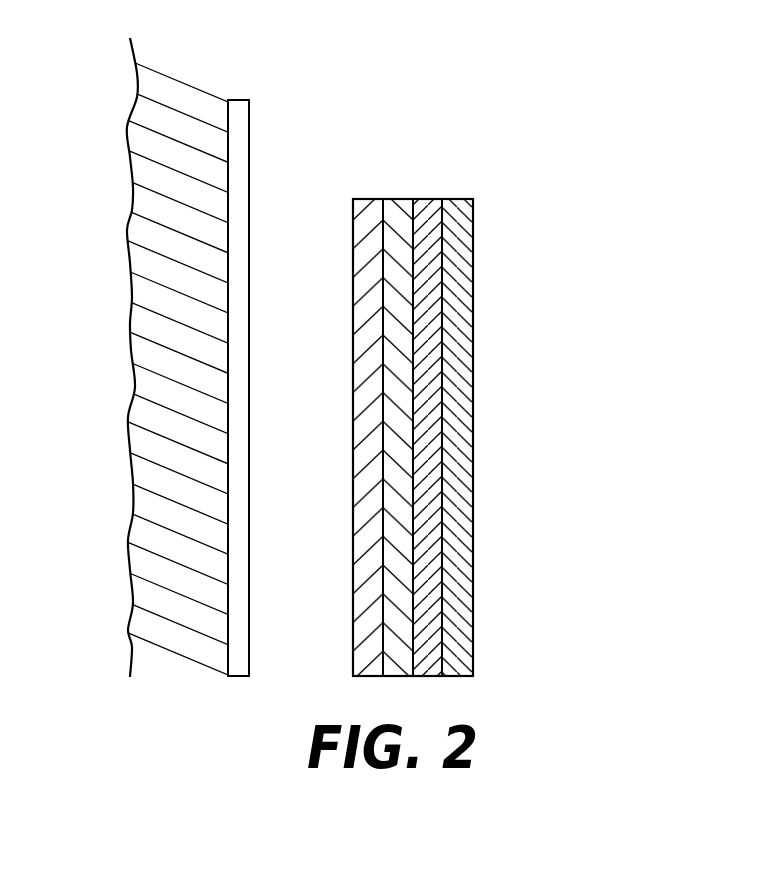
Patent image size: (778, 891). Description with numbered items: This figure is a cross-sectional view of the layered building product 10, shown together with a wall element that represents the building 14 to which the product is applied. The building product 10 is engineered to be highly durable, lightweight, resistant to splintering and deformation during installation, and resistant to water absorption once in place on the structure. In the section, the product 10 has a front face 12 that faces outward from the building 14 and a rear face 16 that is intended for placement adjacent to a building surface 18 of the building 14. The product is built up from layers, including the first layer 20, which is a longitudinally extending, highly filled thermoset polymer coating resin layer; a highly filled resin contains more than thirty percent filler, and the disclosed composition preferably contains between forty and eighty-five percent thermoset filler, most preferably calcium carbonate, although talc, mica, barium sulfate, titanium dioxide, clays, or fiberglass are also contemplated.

The layered building product 10 is at (570, 105).
The front face 12 is at (473, 340).
The building 14 is at (227, 328).
The rear face 16 is at (353, 221).
The building surface 18 is at (249, 645).
The first layer 20 is at (462, 199).